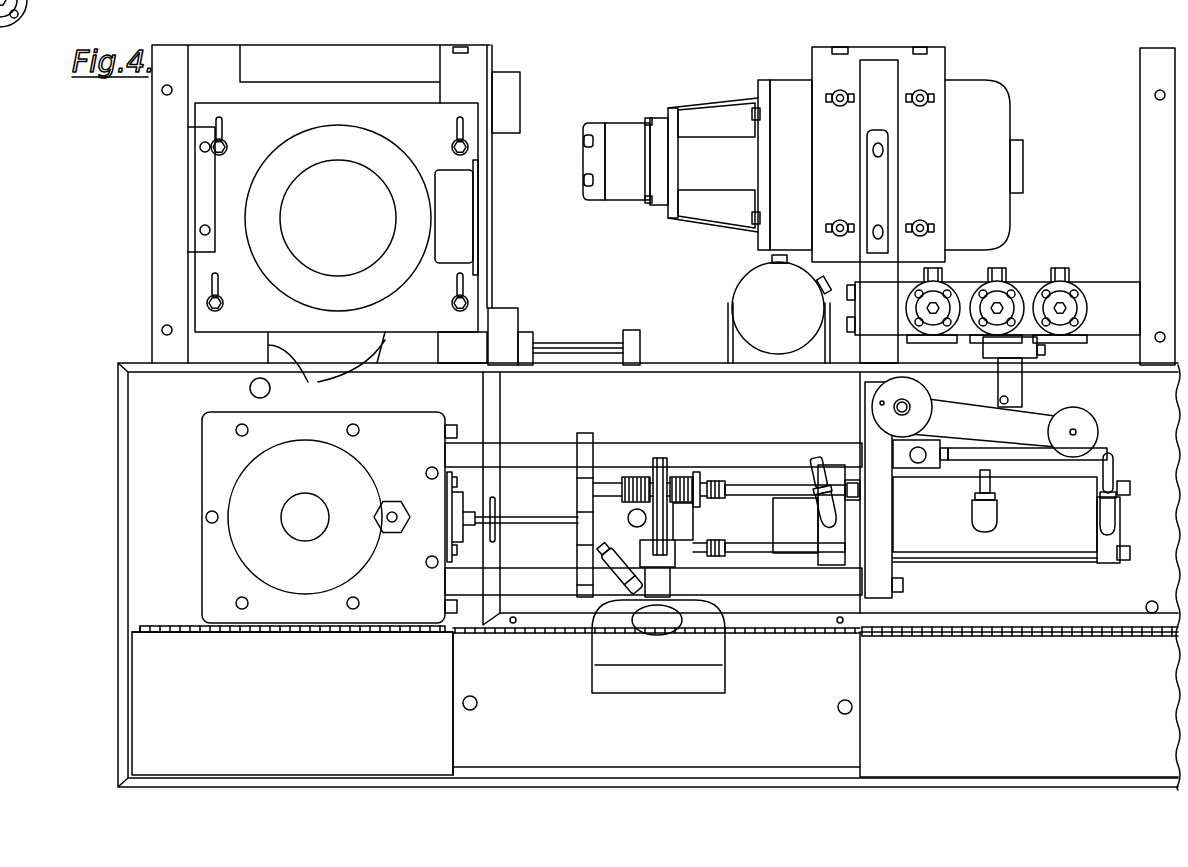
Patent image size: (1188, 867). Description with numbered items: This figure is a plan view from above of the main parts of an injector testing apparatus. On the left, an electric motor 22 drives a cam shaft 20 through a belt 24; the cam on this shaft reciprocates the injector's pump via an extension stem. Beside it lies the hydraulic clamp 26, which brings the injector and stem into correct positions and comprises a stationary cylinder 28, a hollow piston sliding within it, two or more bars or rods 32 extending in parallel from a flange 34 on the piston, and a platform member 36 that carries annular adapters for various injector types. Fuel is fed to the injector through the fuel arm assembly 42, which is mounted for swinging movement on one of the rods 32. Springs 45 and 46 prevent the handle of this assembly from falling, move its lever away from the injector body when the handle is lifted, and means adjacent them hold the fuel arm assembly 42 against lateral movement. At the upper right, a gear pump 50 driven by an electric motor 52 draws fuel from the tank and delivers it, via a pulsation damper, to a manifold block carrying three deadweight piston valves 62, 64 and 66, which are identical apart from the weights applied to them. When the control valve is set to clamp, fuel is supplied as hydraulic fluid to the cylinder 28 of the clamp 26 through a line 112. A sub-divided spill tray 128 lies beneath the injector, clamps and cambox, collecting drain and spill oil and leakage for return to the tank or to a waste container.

The cam shaft 20 is at (317, 510).
The electric motor 22 is at (370, 190).
The belt 24 is at (308, 380).
The hydraulic clamp 26 is at (959, 574).
The stationary cylinder 28 is at (1062, 542).
The bars or rods 32 is at (747, 547).
The flange 34 is at (828, 558).
The platform member 36 is at (585, 440).
The fuel arm assembly 42 is at (663, 622).
The spring 45 is at (635, 478).
The spring 46 is at (680, 478).
The gear pump 50 is at (620, 137).
The electric motor 52 is at (997, 112).
The deadweight piston valve 62 is at (942, 289).
The deadweight piston valve 64 is at (1005, 288).
The deadweight piston valve 66 is at (1070, 288).
The line 112 is at (1107, 468).
The sub-divided spill tray 128 is at (472, 618).